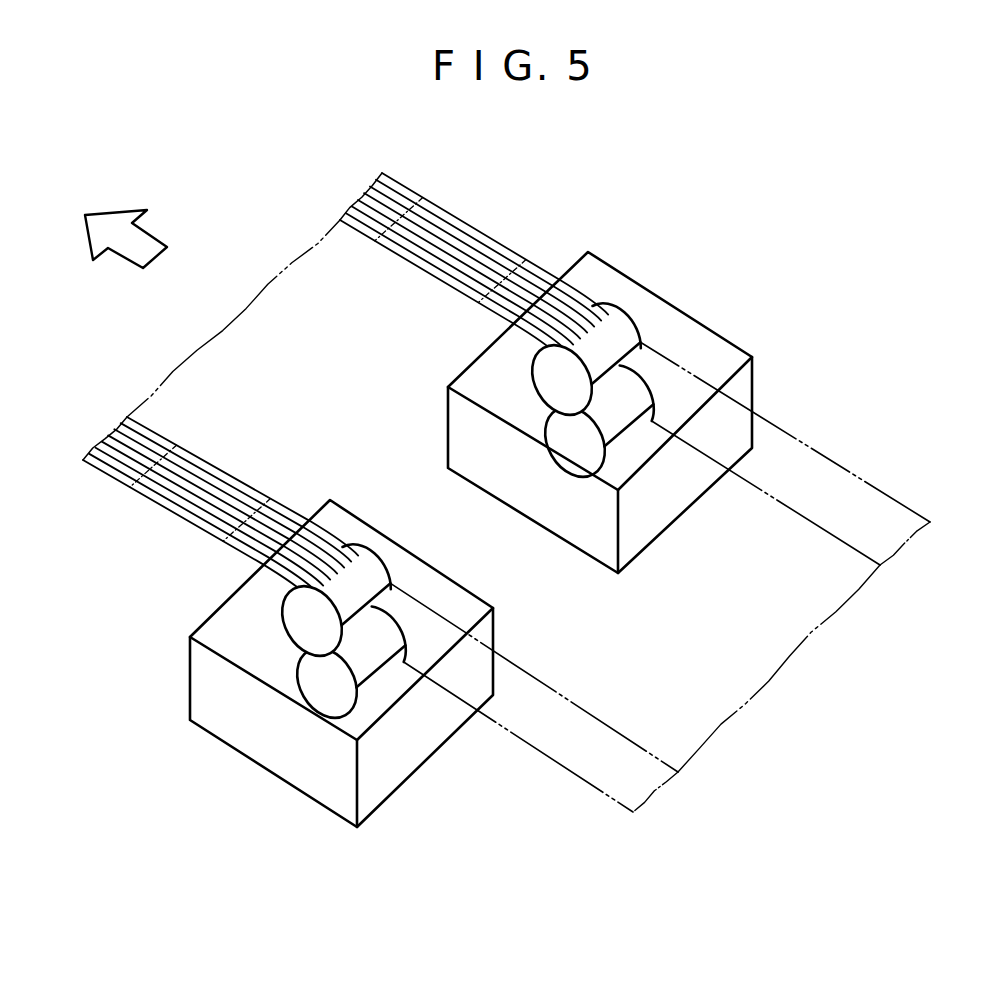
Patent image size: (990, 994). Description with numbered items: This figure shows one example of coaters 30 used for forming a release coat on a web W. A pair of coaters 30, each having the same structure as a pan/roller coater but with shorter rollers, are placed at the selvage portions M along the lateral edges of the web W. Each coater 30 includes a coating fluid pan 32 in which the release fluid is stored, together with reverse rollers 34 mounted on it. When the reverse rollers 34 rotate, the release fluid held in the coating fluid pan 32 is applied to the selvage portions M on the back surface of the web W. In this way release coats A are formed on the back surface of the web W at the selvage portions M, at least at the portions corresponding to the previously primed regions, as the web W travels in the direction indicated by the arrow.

The roller unit 30 is at (506, 525).
The coating fluid pan 32 is at (740, 413).
The reverse rollers 34 is at (640, 387).
The release coats A is at (445, 237).
The web W is at (851, 453).
The selvage portions M is at (864, 514).